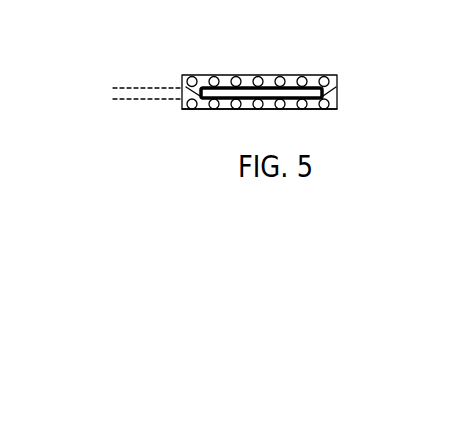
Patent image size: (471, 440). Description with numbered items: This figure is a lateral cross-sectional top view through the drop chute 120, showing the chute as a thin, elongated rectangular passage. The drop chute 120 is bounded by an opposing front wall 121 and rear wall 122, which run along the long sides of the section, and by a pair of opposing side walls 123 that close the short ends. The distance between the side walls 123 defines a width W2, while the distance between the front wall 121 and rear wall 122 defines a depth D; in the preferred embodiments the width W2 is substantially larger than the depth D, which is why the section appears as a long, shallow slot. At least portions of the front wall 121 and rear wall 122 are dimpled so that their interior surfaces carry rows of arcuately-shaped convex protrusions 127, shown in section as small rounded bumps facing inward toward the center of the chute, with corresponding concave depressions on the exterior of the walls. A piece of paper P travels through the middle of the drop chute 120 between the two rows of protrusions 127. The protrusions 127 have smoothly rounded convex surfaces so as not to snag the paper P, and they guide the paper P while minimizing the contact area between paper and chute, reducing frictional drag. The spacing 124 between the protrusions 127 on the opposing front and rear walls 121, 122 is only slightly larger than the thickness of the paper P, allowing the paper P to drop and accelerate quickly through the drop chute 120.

The drop chute 120 is at (350, 114).
The front wall 121 is at (205, 75).
The rear wall 122 is at (295, 109).
The side walls 123 is at (337, 93).
The spacing 124 is at (123, 127).
The convex protrusions 127 is at (212, 110).
The depth D is at (248, 130).
The paper P is at (293, 75).
The width W2 is at (335, 113).